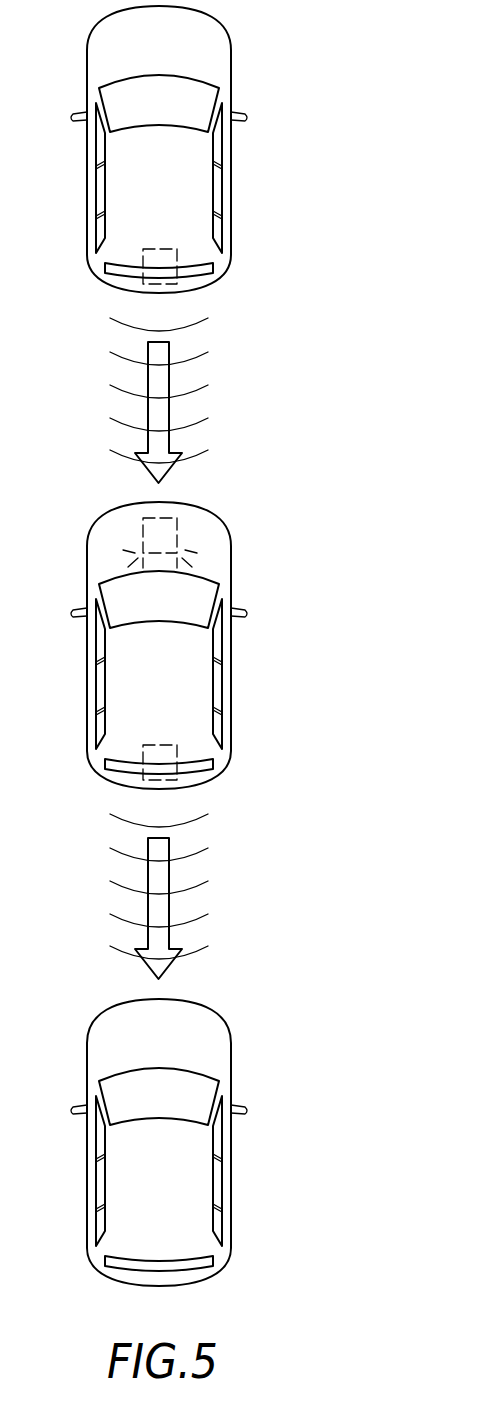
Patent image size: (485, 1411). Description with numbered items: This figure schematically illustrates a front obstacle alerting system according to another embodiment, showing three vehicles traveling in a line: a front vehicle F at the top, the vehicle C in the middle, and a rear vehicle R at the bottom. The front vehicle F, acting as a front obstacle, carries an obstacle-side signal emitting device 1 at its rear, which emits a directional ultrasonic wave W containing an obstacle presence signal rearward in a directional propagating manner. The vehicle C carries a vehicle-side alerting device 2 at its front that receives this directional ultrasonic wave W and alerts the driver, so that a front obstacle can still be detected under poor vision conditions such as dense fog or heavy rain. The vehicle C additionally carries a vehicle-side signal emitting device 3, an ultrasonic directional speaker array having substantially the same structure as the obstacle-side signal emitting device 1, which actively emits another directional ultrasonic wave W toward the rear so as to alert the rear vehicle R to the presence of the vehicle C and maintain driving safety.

The front vehicle F is at (240, 79).
The vehicle C is at (196, 645).
The rear vehicle R is at (196, 1142).
The obstacle-side signal emitting device 1 is at (186, 254).
The vehicle-side alerting device 2 is at (217, 538).
The vehicle-side signal emitting device 3 is at (227, 754).
The directional ultrasonic wave W is at (165, 380).